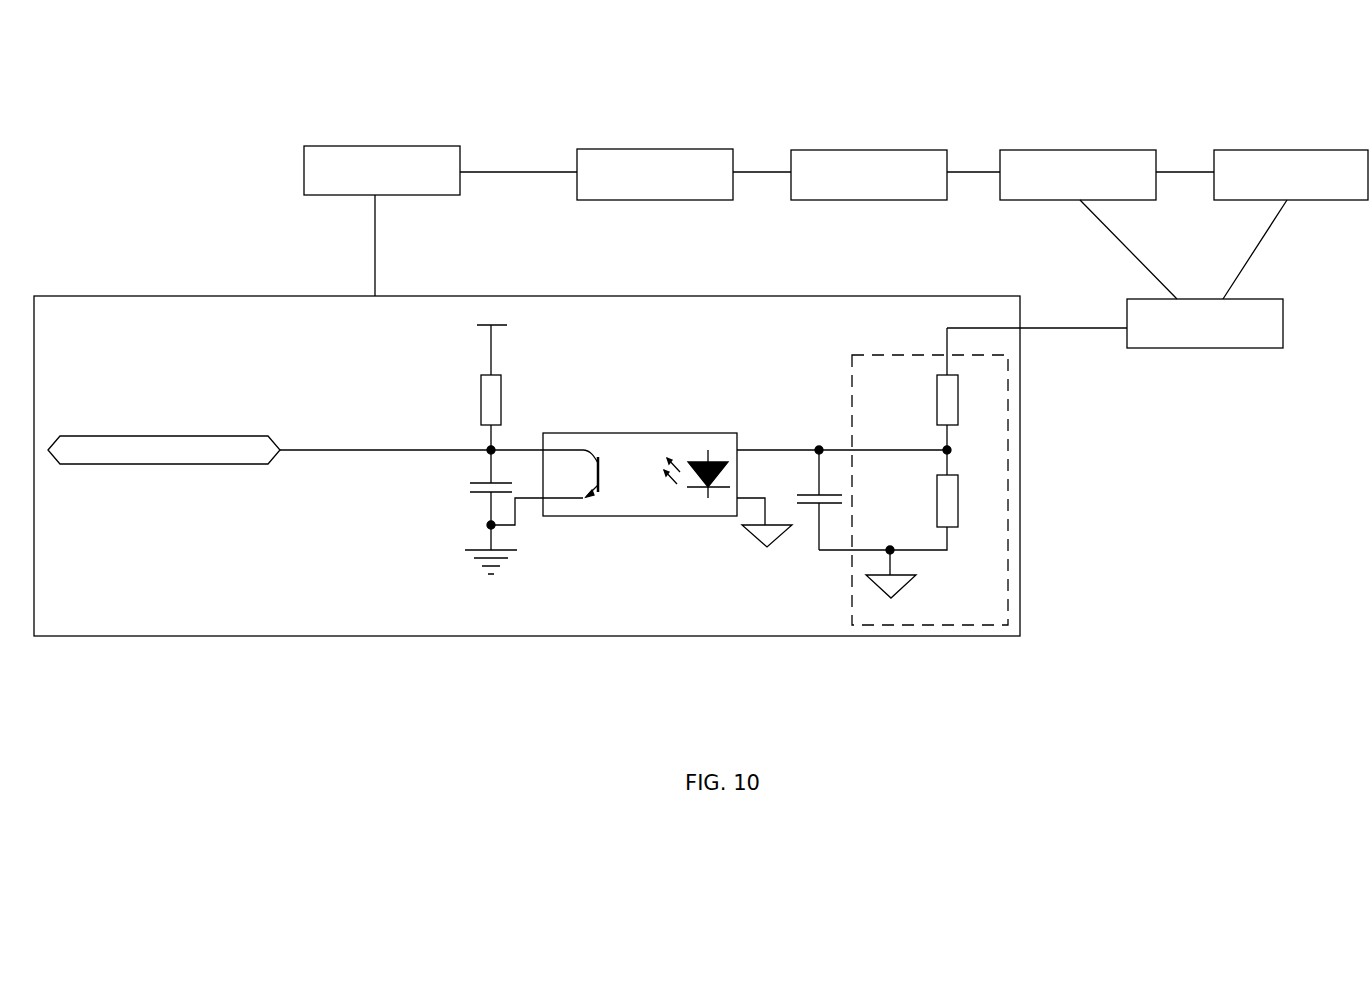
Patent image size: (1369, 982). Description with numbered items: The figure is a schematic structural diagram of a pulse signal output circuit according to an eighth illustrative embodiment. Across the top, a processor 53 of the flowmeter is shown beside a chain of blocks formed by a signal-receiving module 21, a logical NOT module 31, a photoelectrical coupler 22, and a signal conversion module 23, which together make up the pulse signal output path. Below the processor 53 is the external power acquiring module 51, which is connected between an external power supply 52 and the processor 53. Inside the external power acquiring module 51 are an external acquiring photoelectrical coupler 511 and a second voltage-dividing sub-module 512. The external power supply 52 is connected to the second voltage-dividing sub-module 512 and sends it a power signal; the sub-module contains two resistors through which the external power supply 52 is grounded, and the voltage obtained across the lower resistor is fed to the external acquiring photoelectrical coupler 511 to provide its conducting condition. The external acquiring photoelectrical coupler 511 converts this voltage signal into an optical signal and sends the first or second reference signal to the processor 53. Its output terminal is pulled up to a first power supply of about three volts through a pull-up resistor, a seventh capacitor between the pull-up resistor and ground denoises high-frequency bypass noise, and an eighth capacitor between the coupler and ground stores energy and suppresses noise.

The processor 53 is at (434, 146).
The signal-receiving module 21 is at (650, 149).
The logical NOT module 31 is at (865, 150).
The photoelectrical coupler 22 is at (1078, 150).
The signal conversion module 23 is at (1285, 150).
The external power supply 52 is at (1203, 348).
The external power acquiring module 51 is at (623, 636).
The external acquiring photoelectrical coupler 511 is at (592, 404).
The second voltage-dividing sub-module 512 is at (1008, 473).